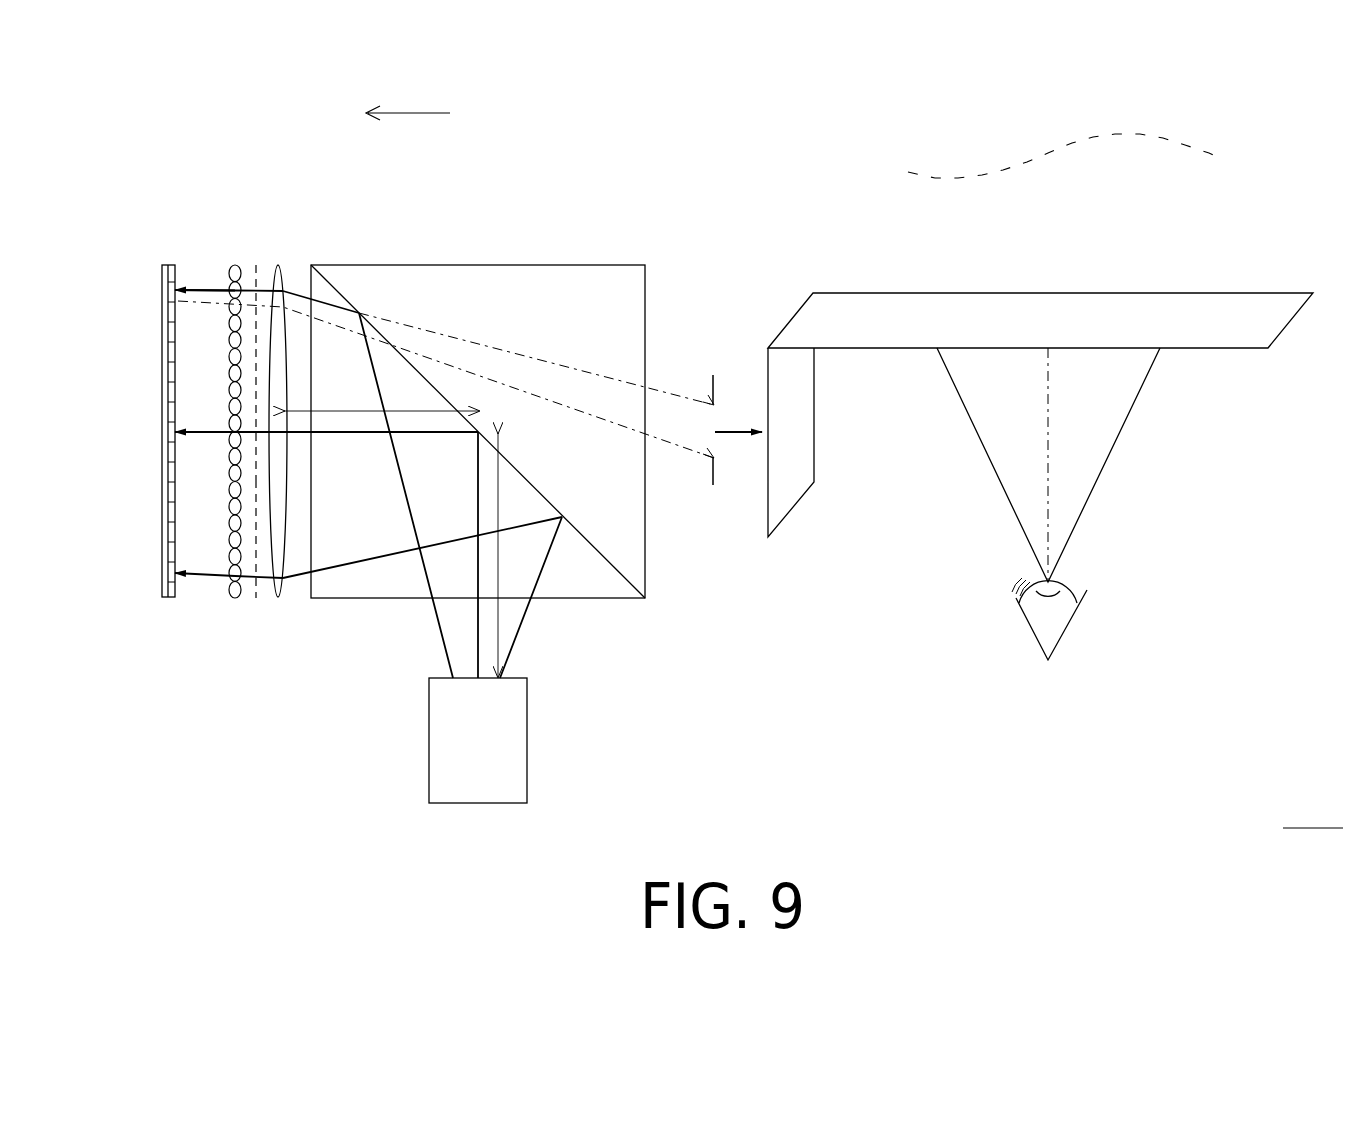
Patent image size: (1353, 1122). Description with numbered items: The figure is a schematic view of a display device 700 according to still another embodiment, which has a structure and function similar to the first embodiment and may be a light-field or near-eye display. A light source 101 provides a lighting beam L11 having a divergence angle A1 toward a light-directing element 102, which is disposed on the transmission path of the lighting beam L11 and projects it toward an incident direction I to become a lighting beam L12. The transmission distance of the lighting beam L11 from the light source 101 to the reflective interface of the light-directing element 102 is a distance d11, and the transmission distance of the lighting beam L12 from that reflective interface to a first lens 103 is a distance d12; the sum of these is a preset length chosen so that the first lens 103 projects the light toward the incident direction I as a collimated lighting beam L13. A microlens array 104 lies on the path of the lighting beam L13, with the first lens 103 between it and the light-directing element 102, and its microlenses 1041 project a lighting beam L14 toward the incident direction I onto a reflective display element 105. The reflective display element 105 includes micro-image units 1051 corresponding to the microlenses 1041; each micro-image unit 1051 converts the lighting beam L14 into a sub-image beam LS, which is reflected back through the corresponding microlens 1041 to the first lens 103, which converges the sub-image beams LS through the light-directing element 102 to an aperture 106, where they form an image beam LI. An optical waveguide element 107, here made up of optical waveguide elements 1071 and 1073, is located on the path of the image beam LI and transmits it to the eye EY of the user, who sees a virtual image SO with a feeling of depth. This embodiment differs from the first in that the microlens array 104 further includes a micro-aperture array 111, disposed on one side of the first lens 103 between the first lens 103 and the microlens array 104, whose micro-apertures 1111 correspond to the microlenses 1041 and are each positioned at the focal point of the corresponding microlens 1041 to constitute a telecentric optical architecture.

The display device 700 is at (1313, 807).
The light source 101 is at (503, 772).
The light-directing element 102 is at (552, 262).
The first lens 103 is at (280, 268).
The microlens array 104 is at (166, 368).
The microlens 1041 is at (232, 393).
The reflective display element 105 is at (156, 276).
The micro-image unit 1051 is at (168, 322).
The aperture 106 is at (715, 480).
The optical waveguide element 107 is at (1040, 396).
The optical waveguide element 1071 is at (815, 447).
The optical waveguide element 1073 is at (873, 303).
The micro-aperture array 111 is at (184, 389).
The micro-aperture 1111 is at (253, 509).
The lighting beam L11 is at (447, 662).
The lighting beam L12 is at (318, 598).
The lighting beam L13 is at (257, 577).
The lighting beam L14 is at (207, 577).
The sub-image beam LS is at (207, 300).
The image beam LI is at (736, 424).
The divergence angle A1 is at (500, 623).
The distance d11 is at (498, 612).
The distance d12 is at (418, 408).
The incident direction I is at (408, 95).
The virtual image SO is at (888, 167).
The eye EY is at (1058, 627).